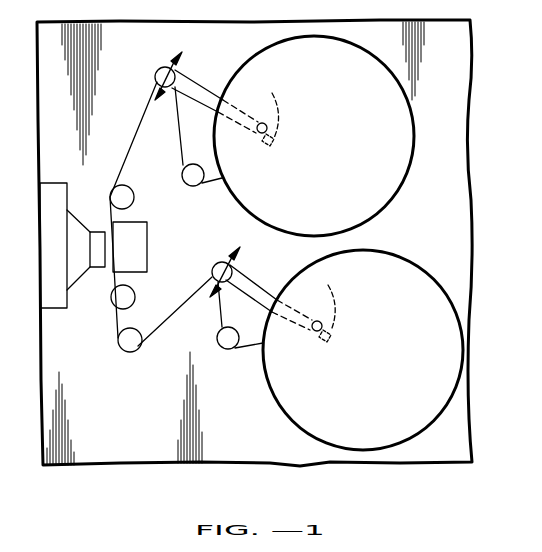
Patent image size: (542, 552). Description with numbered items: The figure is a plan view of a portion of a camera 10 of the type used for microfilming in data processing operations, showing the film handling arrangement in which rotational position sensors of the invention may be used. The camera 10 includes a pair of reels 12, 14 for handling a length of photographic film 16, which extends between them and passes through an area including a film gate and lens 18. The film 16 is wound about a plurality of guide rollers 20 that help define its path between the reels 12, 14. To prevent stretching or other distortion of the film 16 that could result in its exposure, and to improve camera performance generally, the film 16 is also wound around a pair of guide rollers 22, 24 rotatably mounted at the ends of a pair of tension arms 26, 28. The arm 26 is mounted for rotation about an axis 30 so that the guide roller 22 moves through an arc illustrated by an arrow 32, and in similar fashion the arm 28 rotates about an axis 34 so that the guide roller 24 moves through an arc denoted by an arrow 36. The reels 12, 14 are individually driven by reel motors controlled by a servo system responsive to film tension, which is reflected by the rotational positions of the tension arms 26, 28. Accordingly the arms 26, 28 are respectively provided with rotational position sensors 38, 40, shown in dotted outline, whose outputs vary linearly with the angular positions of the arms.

The camera 10 is at (82, 480).
The reel 12 is at (415, 118).
The reel 14 is at (463, 338).
The photographic film 16 is at (163, 316).
The film gate and lens 18 is at (100, 292).
The guide rollers 20 is at (130, 192).
The guide roller 22 is at (155, 76).
The guide roller 24 is at (211, 269).
The tension arm 26 is at (196, 86).
The tension arm 28 is at (247, 284).
The axis 30 is at (257, 133).
The arrow 32 is at (172, 62).
The axis 34 is at (312, 333).
The arrow 36 is at (226, 256).
The rotational position sensor 38 is at (264, 114).
The rotational position sensor 40 is at (319, 310).